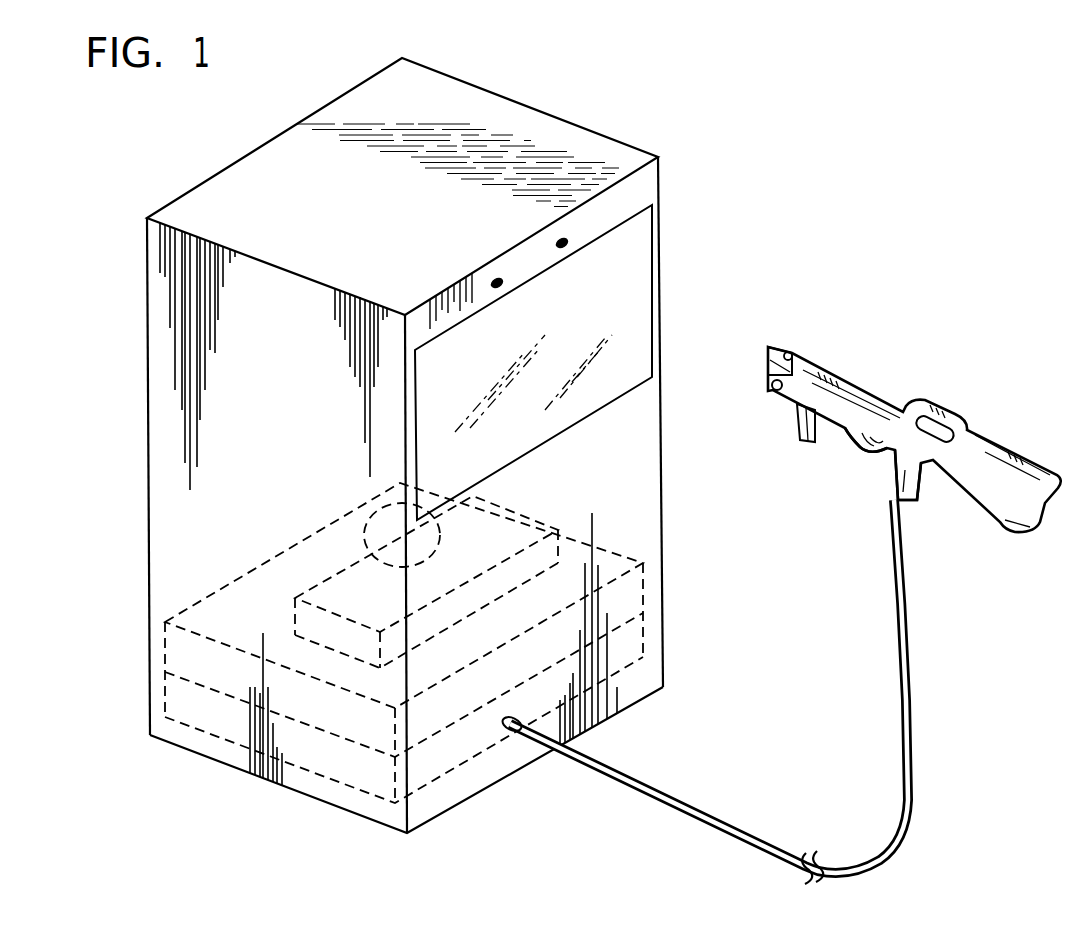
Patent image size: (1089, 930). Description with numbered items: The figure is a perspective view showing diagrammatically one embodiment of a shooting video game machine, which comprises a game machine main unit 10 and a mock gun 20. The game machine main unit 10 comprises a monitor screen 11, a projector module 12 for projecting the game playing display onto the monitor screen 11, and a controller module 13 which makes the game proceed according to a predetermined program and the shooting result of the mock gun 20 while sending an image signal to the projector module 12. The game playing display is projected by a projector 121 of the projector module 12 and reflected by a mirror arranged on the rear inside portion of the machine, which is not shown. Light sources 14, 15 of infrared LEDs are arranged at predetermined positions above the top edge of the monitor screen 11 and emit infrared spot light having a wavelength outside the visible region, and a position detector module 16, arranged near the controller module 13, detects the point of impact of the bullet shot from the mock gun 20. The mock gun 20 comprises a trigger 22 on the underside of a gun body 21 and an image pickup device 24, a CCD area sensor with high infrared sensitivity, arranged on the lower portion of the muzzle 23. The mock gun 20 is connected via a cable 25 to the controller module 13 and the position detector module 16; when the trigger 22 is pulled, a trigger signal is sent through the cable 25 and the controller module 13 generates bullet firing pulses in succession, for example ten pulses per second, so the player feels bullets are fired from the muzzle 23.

The game machine main unit 10 is at (616, 128).
The monitor screen 11 is at (640, 293).
The projector module 12 is at (330, 598).
The projector 121 is at (372, 505).
The controller module 13 is at (330, 763).
The light source 14 is at (497, 278).
The light source 15 is at (560, 238).
The position detector module 16 is at (243, 687).
The mock gun 20 is at (896, 422).
The gun body 21 is at (937, 460).
The trigger 22 is at (858, 450).
The muzzle 23 is at (768, 350).
The image pickup device 24 is at (775, 392).
The cable 25 is at (742, 834).